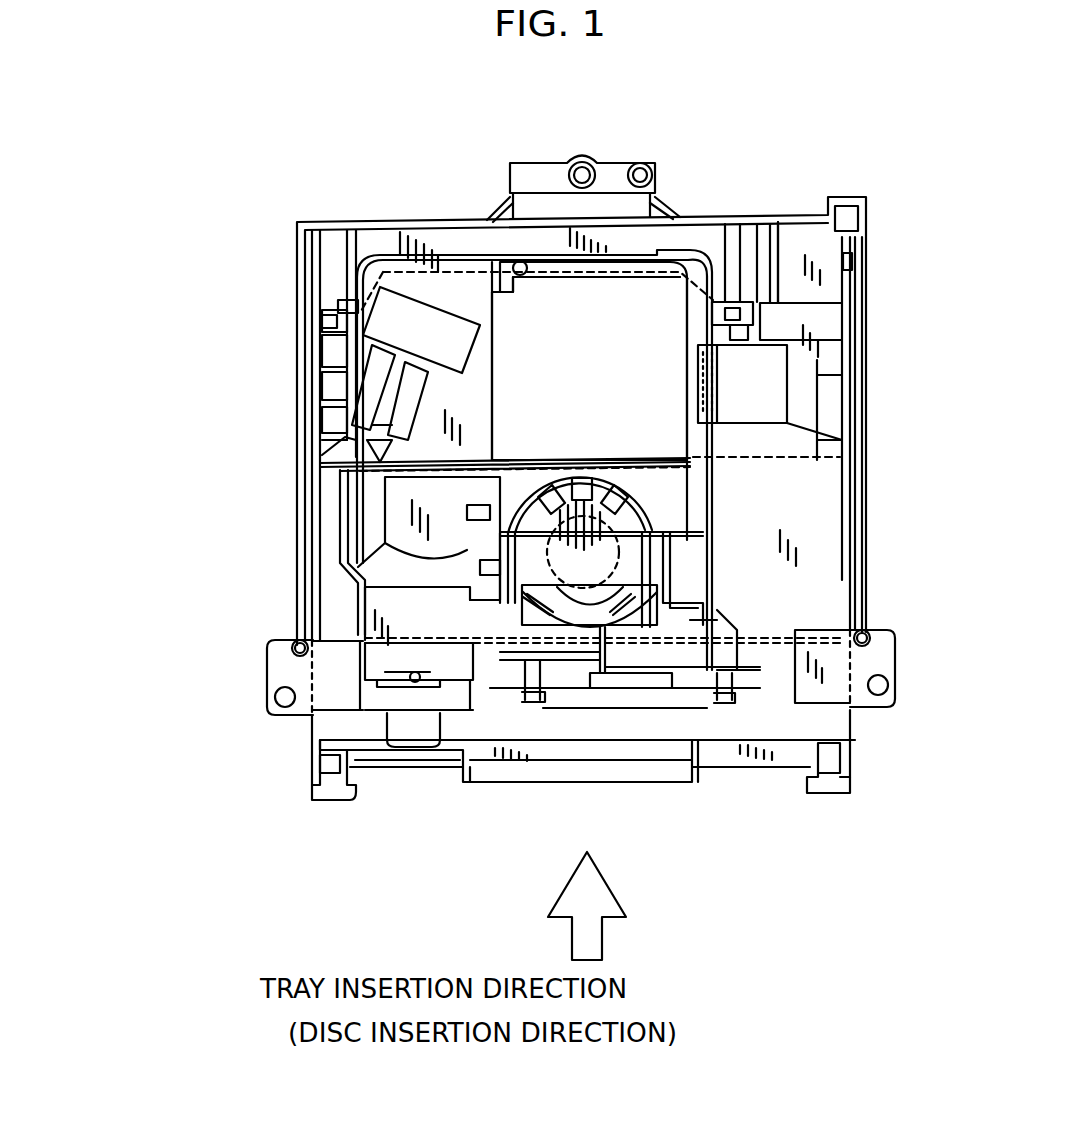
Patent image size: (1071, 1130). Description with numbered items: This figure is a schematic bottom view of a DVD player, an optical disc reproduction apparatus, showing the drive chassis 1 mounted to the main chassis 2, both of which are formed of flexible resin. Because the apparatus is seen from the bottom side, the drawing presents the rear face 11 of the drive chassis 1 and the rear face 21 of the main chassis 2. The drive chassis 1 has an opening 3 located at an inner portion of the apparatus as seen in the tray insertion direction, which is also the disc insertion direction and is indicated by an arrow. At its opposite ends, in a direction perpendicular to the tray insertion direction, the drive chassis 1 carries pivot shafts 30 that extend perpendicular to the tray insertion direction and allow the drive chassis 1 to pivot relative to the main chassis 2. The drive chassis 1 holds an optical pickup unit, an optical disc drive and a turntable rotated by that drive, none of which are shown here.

The drive chassis 1 is at (479, 246).
The main chassis 2 is at (352, 218).
The pivot shafts 30 is at (738, 306).
The opening 3 is at (548, 410).
The rear face of the main chassis 21 is at (545, 505).
The rear face of the drive chassis 11 is at (435, 623).